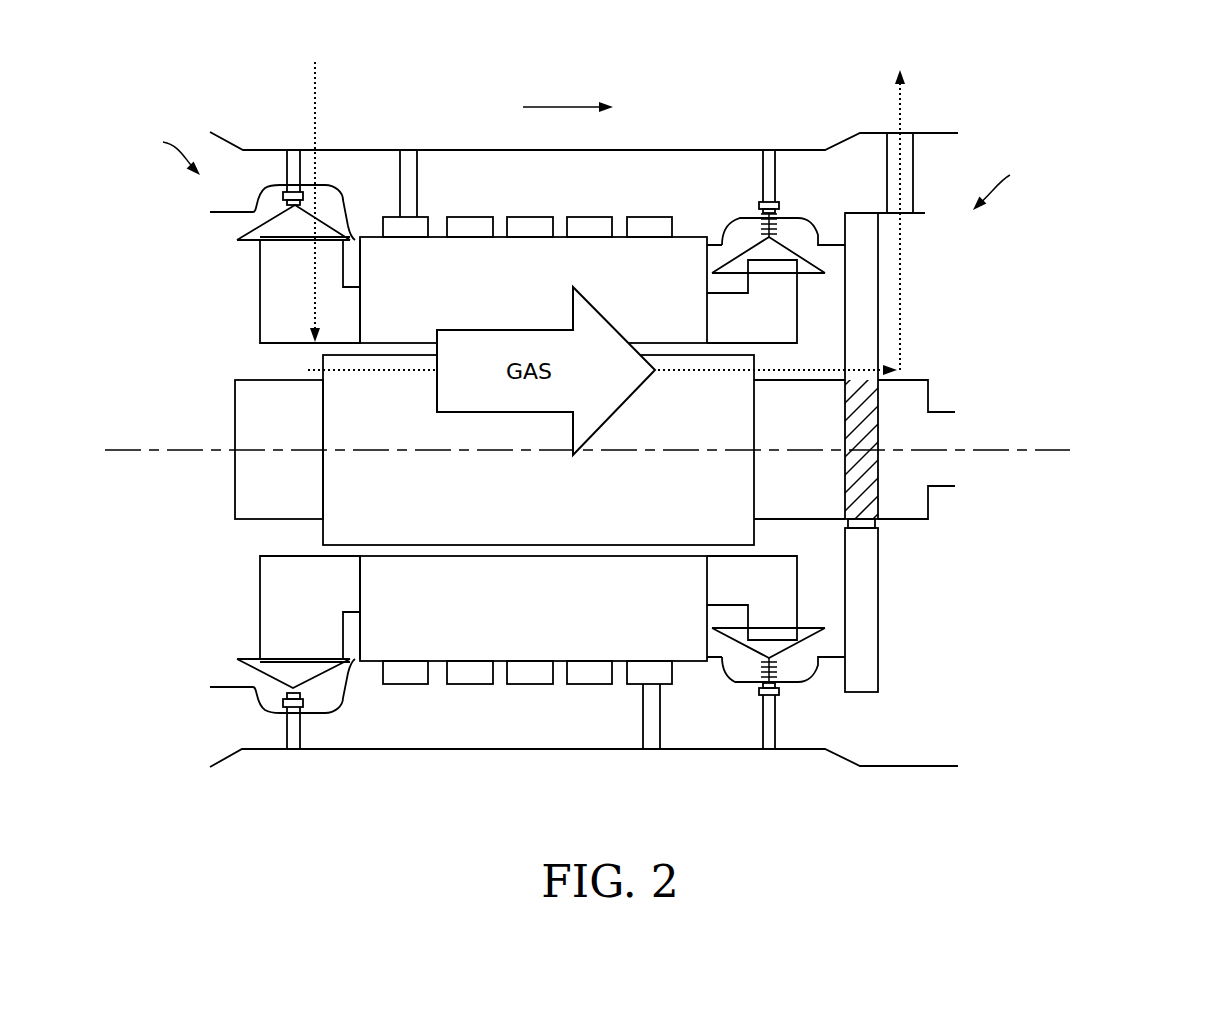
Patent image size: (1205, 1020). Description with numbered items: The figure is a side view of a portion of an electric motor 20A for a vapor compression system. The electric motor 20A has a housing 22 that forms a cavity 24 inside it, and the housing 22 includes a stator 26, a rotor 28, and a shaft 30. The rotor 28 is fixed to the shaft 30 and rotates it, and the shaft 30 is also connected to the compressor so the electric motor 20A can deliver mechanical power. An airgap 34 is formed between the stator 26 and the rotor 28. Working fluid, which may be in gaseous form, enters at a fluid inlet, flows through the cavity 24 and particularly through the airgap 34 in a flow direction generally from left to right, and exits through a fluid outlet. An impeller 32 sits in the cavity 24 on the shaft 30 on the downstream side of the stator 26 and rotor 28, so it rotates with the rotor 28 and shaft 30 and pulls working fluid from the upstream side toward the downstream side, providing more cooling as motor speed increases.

The electric motor 20A is at (1126, 92).
The housing 22 is at (910, 768).
The cavity 24 is at (600, 740).
The stator 26 is at (628, 264).
The rotor 28 is at (378, 540).
The shaft 30 is at (250, 413).
The impeller 32 is at (896, 440).
The airgap 34 is at (272, 359).